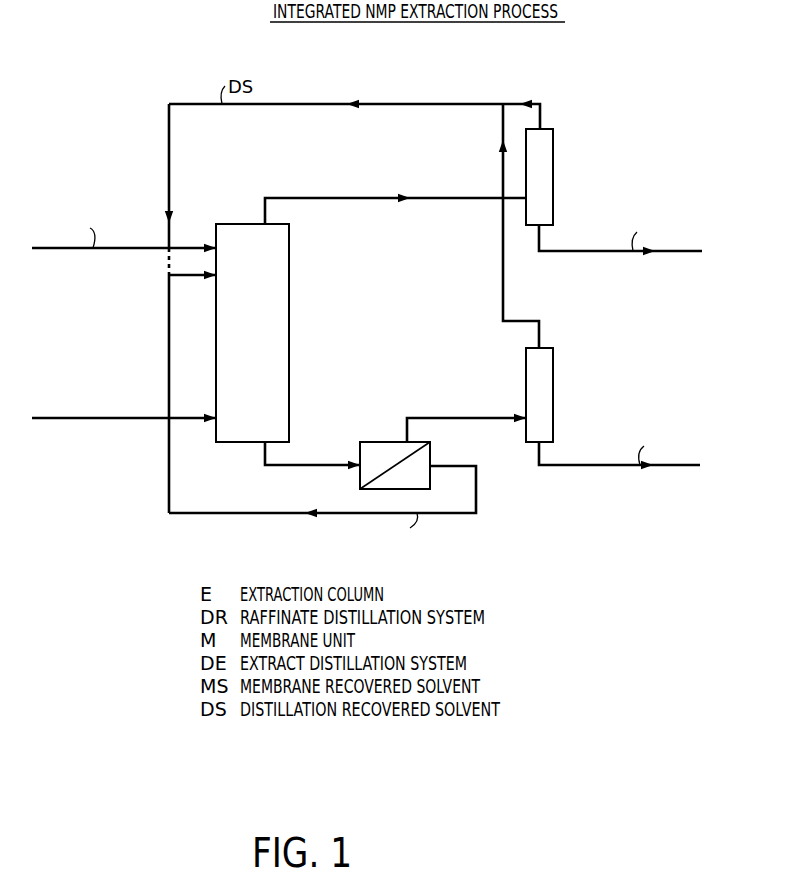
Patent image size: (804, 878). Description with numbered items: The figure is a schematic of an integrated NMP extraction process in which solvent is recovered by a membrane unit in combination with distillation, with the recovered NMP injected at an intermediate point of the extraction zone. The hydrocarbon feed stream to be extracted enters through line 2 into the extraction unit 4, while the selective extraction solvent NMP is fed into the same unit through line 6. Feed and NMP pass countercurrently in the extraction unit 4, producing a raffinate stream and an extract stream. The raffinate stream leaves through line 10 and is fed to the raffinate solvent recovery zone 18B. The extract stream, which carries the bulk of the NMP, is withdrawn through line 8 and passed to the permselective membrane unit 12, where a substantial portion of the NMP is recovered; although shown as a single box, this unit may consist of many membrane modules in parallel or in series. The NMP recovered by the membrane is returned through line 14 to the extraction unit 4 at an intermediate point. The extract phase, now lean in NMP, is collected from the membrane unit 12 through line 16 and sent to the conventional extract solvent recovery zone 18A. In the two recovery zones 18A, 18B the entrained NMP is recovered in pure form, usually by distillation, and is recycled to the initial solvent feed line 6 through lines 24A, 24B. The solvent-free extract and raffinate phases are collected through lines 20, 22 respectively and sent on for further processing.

The feed line 2 is at (135, 418).
The extraction unit 4 is at (290, 322).
The solvent feed line 6 is at (133, 248).
The extract stream line 8 is at (313, 465).
The raffinate stream line 10 is at (325, 198).
The permselective membrane unit 12 is at (395, 442).
The recovered NMP recycle line 14 is at (343, 513).
The extract phase line 16 is at (470, 418).
The extract solvent recovery zone 18A is at (554, 382).
The raffinate solvent recovery zone 18B is at (554, 174).
The solvent-free extract line 20 is at (575, 465).
The solvent-free raffinate line 22 is at (575, 251).
The recovered solvent recycle line 24A is at (527, 321).
The recovered solvent recycle line 24B is at (400, 104).